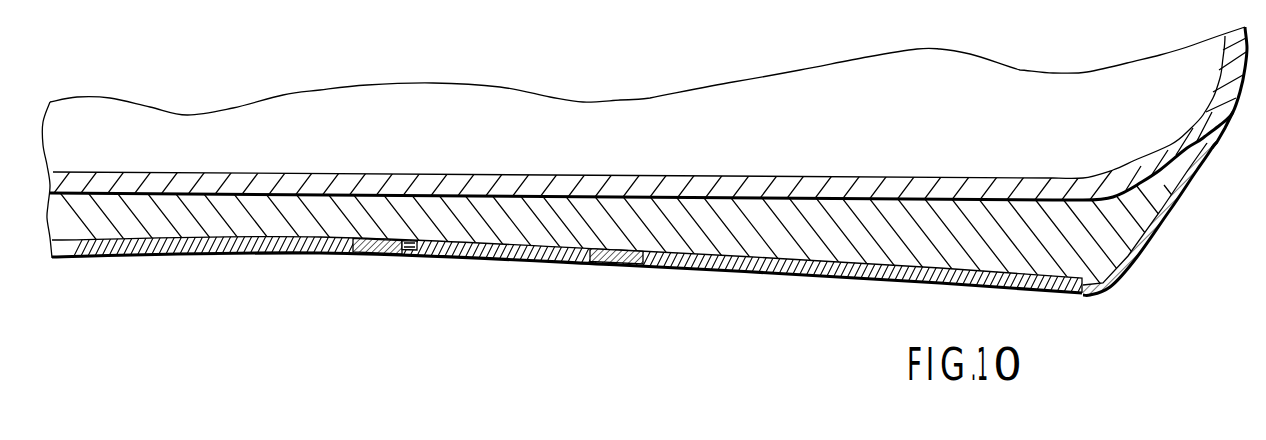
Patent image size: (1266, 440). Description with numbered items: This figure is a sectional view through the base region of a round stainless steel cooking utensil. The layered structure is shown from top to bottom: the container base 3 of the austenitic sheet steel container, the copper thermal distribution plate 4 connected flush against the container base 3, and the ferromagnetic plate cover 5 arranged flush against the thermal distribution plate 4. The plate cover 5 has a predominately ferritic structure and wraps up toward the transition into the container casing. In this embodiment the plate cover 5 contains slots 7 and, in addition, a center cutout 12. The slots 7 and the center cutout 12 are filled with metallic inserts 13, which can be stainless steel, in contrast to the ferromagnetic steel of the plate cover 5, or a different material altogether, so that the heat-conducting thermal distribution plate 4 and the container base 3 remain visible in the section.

The container base 3 is at (300, 172).
The thermal distribution plate 4 is at (533, 217).
The plate cover 5 is at (1127, 255).
The slots 7 is at (350, 250).
The center cutout 12 is at (423, 253).
The metallic insert 13 is at (148, 242).